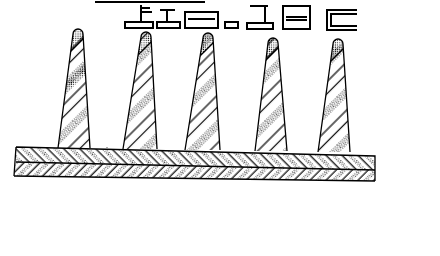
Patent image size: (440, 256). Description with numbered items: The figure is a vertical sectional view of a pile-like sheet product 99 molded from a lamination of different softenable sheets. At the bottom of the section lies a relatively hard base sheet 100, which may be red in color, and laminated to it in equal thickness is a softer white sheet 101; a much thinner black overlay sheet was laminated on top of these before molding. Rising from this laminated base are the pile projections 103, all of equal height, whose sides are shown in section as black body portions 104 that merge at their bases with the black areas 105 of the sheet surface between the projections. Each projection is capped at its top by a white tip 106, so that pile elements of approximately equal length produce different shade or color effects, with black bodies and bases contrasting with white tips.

The sheet product 99 is at (201, 128).
The base sheet 100 is at (194, 187).
The white sheet 101 is at (288, 180).
The pile projections 103 is at (201, 128).
The body portions 104 is at (72, 114).
The black areas 105 is at (107, 147).
The tips 106 is at (71, 50).